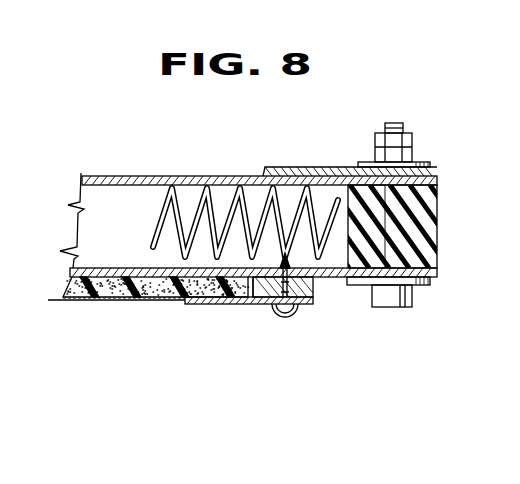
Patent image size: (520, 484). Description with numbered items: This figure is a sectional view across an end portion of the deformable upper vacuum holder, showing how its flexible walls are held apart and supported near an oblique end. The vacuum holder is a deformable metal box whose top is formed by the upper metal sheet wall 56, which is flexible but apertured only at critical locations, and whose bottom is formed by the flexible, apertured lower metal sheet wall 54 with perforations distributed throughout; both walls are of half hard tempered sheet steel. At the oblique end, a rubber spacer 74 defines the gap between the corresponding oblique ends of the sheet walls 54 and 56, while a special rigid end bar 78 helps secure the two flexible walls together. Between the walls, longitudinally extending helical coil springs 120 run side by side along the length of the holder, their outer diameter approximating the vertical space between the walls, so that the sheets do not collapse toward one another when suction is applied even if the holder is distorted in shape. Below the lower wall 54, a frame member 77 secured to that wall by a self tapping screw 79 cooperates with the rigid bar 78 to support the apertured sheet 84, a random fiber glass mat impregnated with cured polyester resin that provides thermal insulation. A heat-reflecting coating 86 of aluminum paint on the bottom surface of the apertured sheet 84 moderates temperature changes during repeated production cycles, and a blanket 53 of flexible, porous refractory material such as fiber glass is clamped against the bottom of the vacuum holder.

The upper metal sheet wall 56 is at (136, 176).
The helical coil spring 120 is at (213, 186).
The special rigid end bar 78 is at (315, 166).
The rubber spacer 74 is at (431, 228).
The lower metal sheet wall 54 is at (117, 268).
The heat-reflecting coating 86 is at (90, 300).
The apertured sheet 84 is at (128, 298).
The blanket 53 is at (158, 300).
The frame member 77 is at (313, 282).
The self tapping screw 79 is at (274, 318).